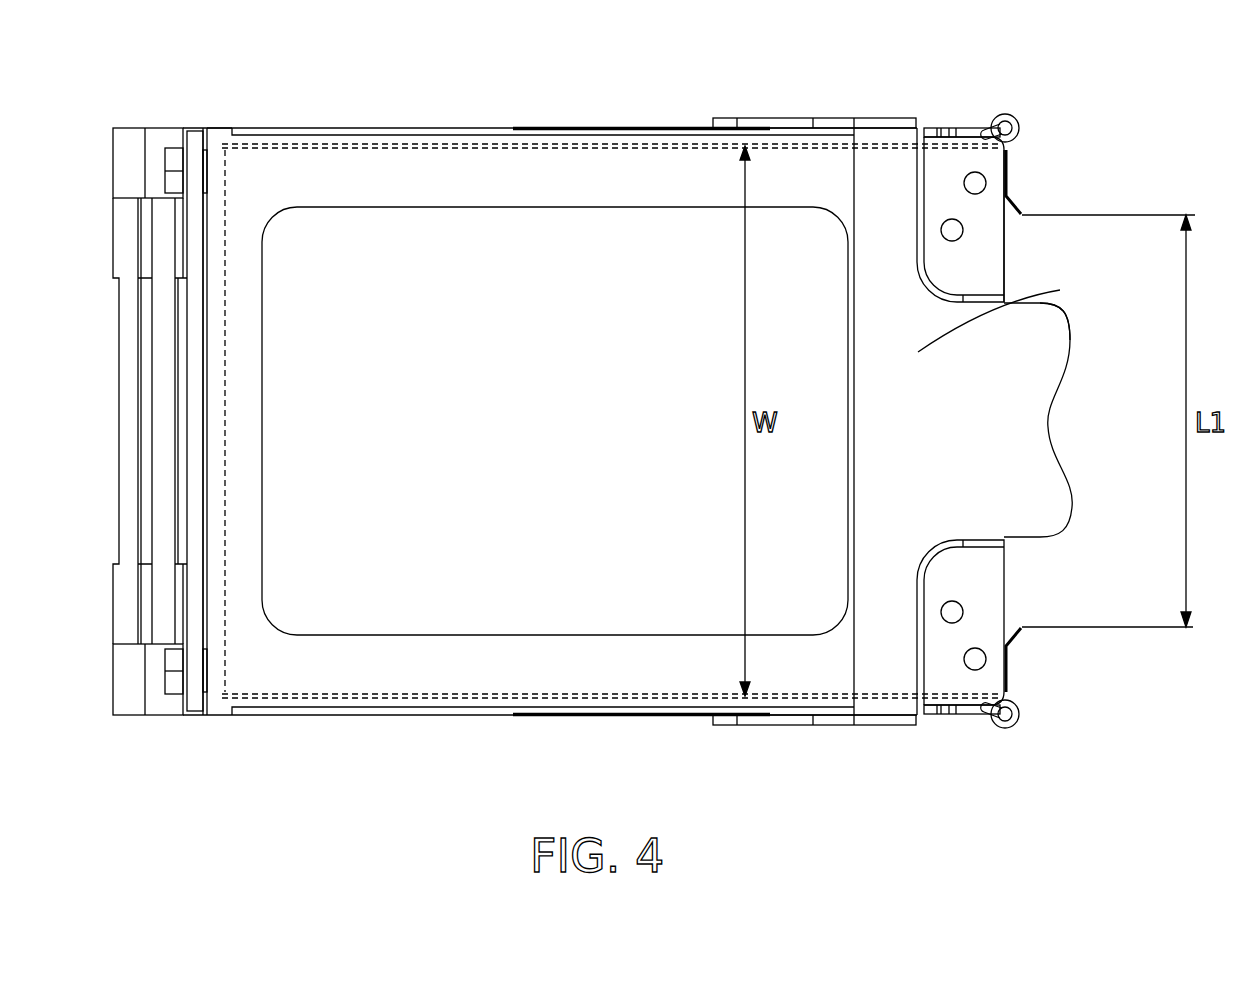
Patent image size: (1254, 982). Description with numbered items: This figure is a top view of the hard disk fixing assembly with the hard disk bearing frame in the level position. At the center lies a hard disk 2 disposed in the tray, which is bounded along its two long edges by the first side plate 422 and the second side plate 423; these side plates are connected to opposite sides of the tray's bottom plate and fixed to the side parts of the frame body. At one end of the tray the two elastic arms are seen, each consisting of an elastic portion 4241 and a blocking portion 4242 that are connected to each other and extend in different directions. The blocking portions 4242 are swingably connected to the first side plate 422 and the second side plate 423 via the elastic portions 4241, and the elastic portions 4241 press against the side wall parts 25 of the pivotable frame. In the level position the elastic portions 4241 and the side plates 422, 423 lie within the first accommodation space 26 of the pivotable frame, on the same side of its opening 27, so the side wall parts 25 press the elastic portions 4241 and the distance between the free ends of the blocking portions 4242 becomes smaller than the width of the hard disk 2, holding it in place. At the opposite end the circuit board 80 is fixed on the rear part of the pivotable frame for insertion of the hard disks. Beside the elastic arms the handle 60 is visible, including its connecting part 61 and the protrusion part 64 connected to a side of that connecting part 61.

The hard disk 2 is at (633, 270).
The first accommodation space 26 is at (214, 118).
The circuit board 80 is at (197, 143).
The second side plate 423 is at (551, 145).
The first side plate 422 is at (553, 700).
The elastic portion 4241 is at (960, 146).
The blocking portion 4242 is at (1007, 183).
The side wall part 25 is at (1012, 116).
The opening 27 is at (1012, 263).
The connecting part 61 is at (1060, 290).
The protrusion part 64 is at (1048, 333).
The handle 60 is at (1072, 372).